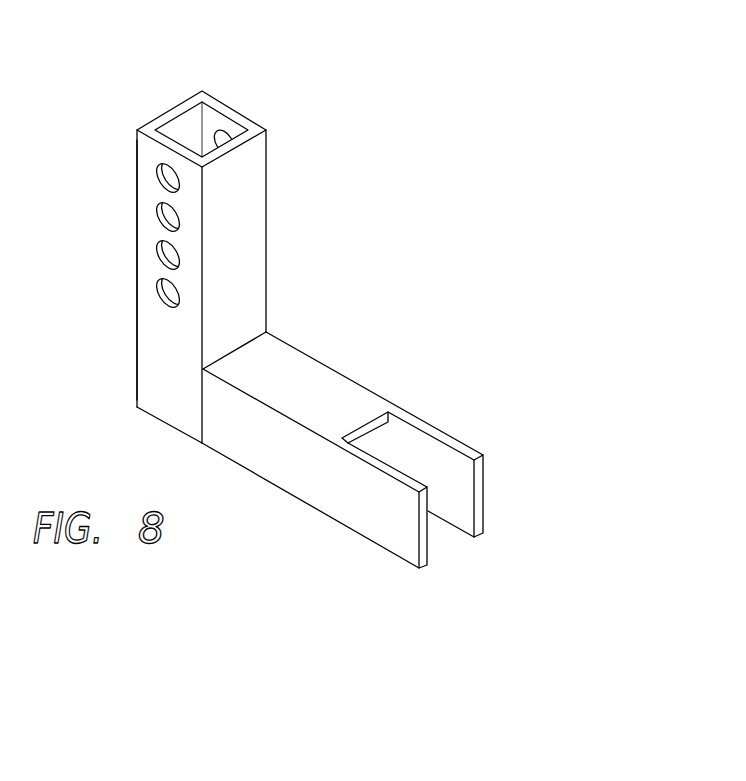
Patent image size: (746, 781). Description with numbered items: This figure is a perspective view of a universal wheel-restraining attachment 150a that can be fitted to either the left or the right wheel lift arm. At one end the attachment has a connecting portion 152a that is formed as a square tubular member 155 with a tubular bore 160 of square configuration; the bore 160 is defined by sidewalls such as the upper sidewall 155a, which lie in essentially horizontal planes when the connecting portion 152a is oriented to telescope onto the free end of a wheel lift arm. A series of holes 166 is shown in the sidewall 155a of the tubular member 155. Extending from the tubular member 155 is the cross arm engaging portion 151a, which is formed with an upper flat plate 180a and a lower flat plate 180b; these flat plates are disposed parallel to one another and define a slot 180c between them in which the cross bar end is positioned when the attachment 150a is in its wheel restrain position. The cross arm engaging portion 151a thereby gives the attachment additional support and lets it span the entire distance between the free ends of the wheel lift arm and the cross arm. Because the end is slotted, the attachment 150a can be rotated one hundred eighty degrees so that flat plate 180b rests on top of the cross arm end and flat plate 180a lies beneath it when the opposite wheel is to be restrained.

The attachment 150a is at (382, 265).
The cross arm engaging portion 151a is at (507, 440).
The connecting portion 152a is at (266, 236).
The tubular member 155 is at (250, 159).
The upper sidewall 155a is at (167, 338).
The tubular bore 160 is at (192, 123).
The holes 166 is at (162, 218).
The flat plate 180a is at (422, 530).
The flat plate 180b is at (482, 493).
The slot 180c is at (452, 545).